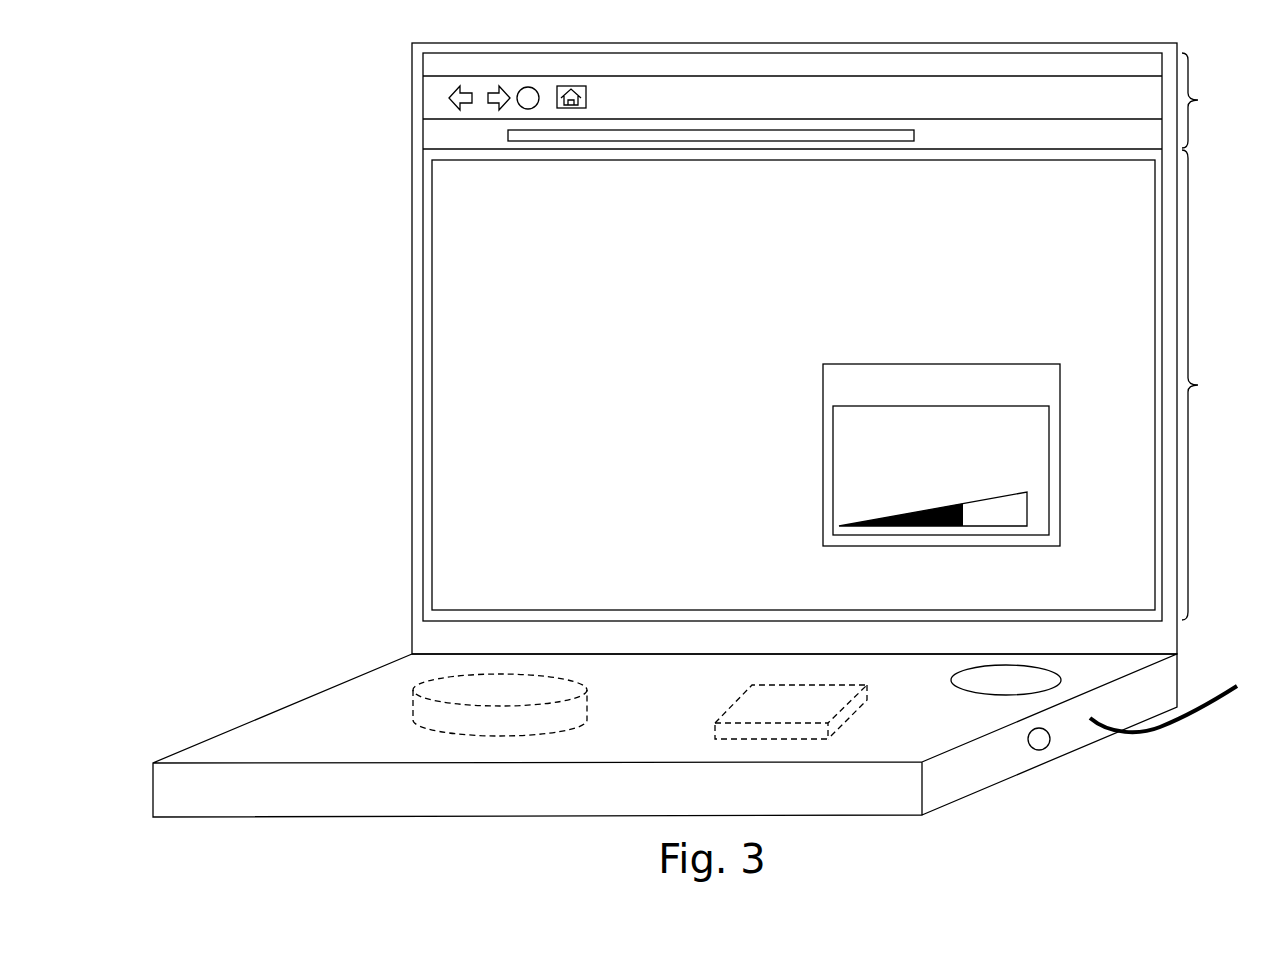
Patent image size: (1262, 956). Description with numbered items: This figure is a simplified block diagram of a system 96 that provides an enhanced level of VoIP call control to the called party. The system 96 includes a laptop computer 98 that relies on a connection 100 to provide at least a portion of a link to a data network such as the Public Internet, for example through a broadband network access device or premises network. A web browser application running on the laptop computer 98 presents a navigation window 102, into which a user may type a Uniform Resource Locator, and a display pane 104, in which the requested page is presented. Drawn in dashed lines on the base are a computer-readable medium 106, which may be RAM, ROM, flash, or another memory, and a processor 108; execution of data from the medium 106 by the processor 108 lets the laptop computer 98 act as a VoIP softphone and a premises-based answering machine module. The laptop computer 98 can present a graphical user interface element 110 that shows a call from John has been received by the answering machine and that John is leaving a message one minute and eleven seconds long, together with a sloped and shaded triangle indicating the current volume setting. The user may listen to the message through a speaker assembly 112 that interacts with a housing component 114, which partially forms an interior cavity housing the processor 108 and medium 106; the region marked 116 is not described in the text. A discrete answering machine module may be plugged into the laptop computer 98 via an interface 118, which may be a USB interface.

The system 96 is at (300, 377).
The laptop computer 98 is at (397, 108).
The connection 100 is at (1232, 716).
The navigation window 102 is at (1217, 100).
The display pane 104 is at (842, 385).
The computer-readable medium 106 is at (479, 704).
The processor 108 is at (771, 716).
The graphical user interface element 110 is at (867, 394).
The speaker assembly 112 is at (988, 691).
The housing component 114 is at (922, 728).
The keyboard area 116 is at (631, 738).
The interface 118 is at (1046, 754).